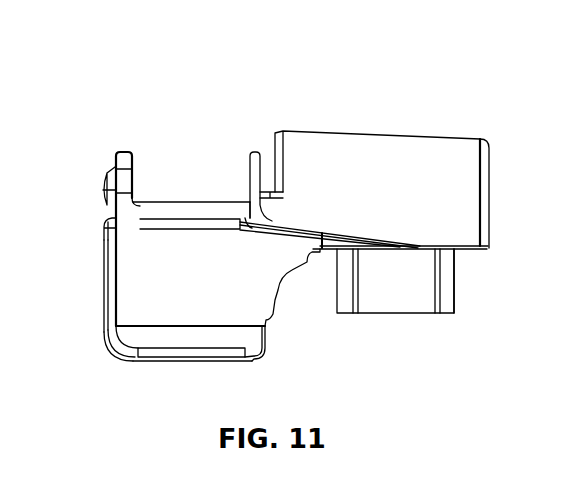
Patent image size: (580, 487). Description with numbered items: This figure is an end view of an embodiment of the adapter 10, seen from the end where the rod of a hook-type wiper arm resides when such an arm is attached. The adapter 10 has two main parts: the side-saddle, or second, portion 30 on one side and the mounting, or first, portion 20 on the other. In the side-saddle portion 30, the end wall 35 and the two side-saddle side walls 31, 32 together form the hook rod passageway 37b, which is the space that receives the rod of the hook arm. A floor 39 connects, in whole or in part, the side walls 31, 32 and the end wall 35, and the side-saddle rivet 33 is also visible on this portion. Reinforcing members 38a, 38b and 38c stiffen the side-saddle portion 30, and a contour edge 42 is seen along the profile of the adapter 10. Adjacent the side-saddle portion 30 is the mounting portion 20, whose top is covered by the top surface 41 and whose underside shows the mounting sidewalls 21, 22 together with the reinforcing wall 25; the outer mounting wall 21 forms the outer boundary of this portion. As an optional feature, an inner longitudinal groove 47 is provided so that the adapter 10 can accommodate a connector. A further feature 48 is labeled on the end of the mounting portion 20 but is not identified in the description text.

The connector assembly 10 is at (145, 102).
The base member 20 is at (395, 332).
The side wall of base member 21 is at (452, 273).
The rib of base member 22 is at (343, 305).
The inner rib of base member 25 is at (398, 285).
The holder 30 is at (183, 132).
The first side wall of holder 31 is at (122, 148).
The second side wall of holder 32 is at (258, 150).
The bottom wall of holder 33 is at (200, 202).
The corner portion 35 is at (117, 328).
The engagement tab 37b is at (168, 212).
The flange portion 38a is at (110, 280).
The upper flange end 38b is at (107, 208).
The lower channel end 38c is at (213, 352).
The bottom plate 39 is at (177, 350).
The housing 41 is at (355, 132).
The bracket portion 42 is at (287, 278).
The ledge 47 is at (267, 170).
The housing end wall 48 is at (485, 187).